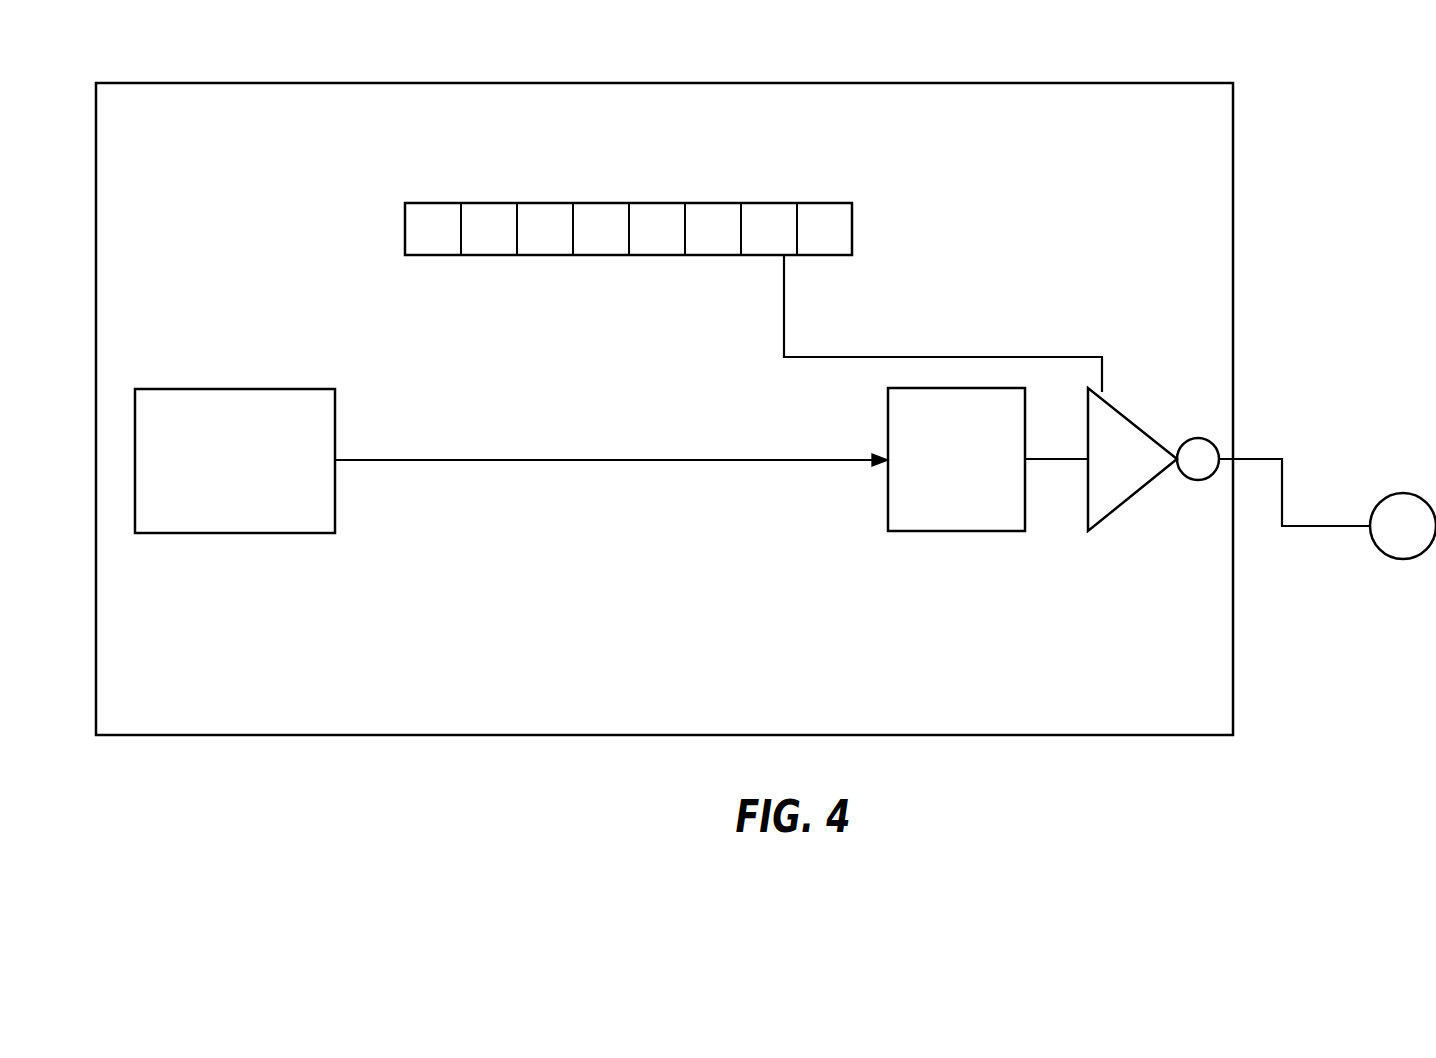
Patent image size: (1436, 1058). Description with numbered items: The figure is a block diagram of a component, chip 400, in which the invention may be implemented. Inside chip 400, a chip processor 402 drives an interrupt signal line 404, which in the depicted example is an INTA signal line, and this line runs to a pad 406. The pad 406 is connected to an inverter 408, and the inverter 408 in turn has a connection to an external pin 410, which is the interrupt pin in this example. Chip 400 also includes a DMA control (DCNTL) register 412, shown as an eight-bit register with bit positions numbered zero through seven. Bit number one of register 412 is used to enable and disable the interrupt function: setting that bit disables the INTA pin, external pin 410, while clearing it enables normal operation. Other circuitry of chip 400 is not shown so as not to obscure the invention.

The chip 400 is at (667, 706).
The chip processor 402 is at (215, 508).
The interrupt signal line 404 is at (435, 462).
The pad 406 is at (935, 531).
The inverter 408 is at (1118, 508).
The external pin 410 is at (1413, 494).
The DMA control (DCNTL) register 412 is at (852, 222).